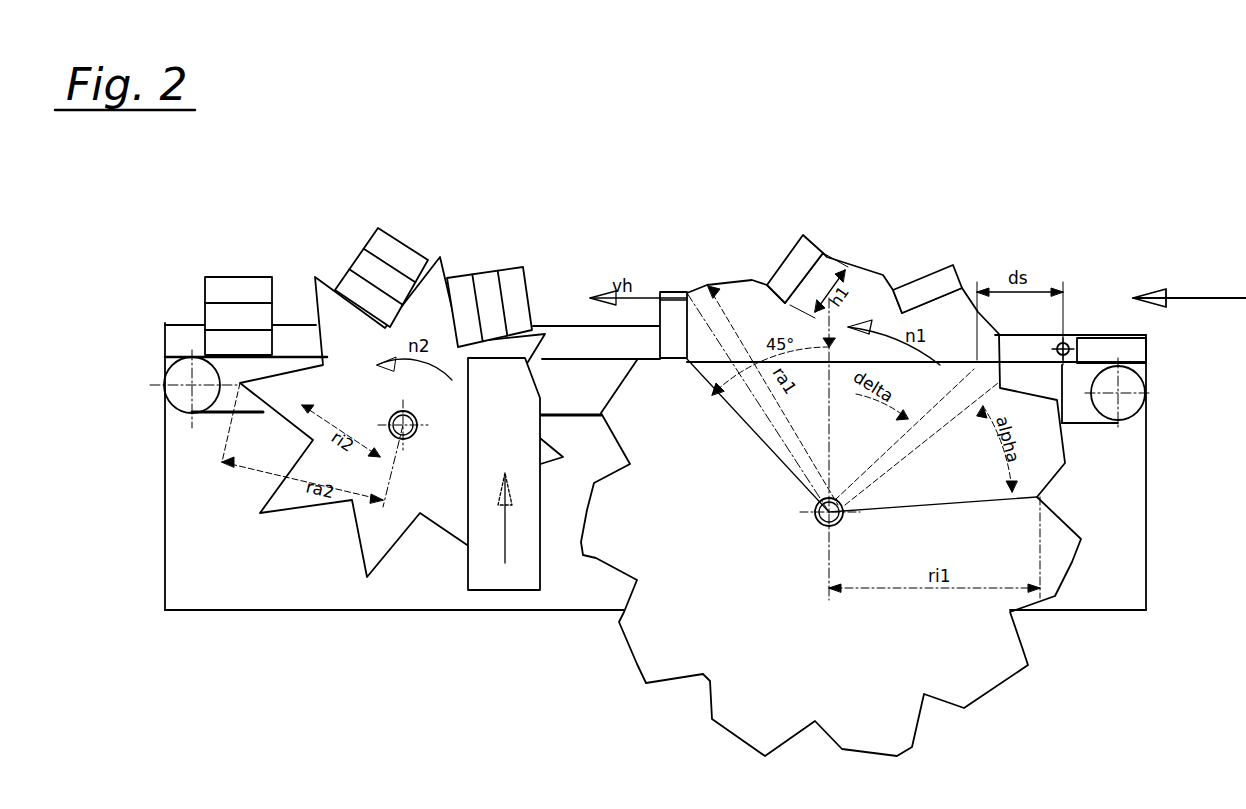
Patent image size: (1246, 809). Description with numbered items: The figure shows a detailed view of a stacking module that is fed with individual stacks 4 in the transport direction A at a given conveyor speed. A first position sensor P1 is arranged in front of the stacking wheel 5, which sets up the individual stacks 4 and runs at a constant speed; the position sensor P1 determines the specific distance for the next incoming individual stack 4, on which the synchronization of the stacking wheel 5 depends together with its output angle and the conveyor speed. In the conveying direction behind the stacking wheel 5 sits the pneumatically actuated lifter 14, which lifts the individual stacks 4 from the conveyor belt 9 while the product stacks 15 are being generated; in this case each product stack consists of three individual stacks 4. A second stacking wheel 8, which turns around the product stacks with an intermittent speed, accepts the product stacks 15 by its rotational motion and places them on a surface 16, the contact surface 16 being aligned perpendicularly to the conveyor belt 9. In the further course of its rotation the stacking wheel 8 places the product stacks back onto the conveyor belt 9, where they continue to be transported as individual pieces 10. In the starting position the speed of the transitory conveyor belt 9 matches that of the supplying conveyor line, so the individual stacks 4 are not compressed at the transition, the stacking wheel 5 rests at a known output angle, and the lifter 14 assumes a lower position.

The individual stack 4 is at (673, 312).
The stacking wheel 5 is at (938, 667).
The stacking wheel 8 is at (368, 548).
The conveyor belt 9 is at (215, 420).
The individual pieces 10 is at (232, 315).
The lifter 14 is at (490, 567).
The product stacks 15 is at (560, 292).
The surface 16 is at (452, 300).
The first position sensor P1 is at (1065, 355).
The transport direction A is at (1189, 283).